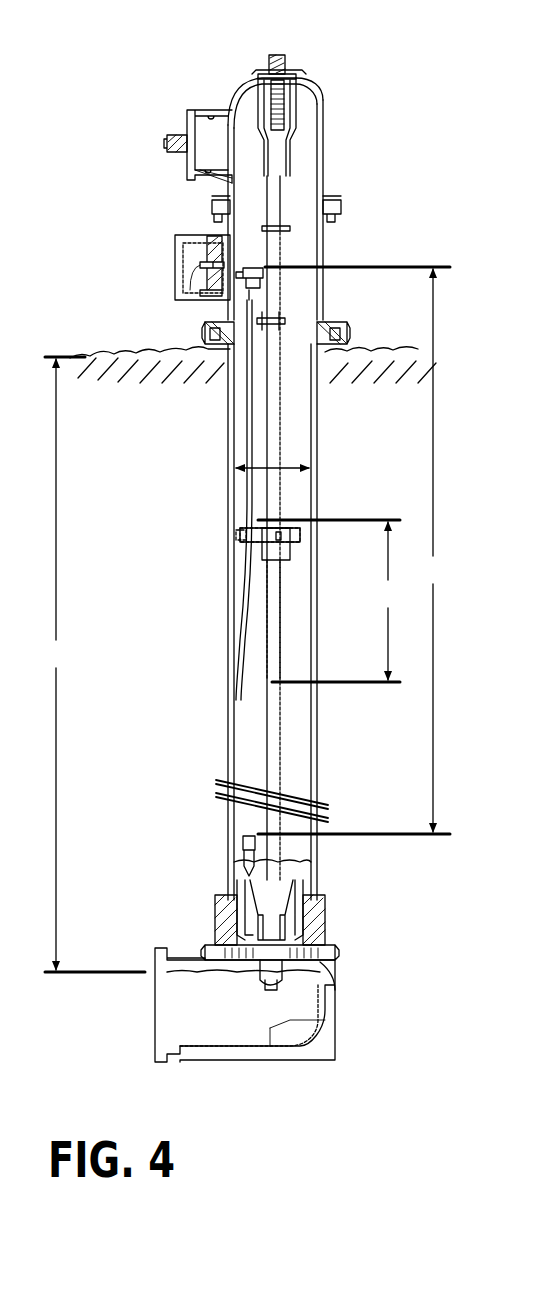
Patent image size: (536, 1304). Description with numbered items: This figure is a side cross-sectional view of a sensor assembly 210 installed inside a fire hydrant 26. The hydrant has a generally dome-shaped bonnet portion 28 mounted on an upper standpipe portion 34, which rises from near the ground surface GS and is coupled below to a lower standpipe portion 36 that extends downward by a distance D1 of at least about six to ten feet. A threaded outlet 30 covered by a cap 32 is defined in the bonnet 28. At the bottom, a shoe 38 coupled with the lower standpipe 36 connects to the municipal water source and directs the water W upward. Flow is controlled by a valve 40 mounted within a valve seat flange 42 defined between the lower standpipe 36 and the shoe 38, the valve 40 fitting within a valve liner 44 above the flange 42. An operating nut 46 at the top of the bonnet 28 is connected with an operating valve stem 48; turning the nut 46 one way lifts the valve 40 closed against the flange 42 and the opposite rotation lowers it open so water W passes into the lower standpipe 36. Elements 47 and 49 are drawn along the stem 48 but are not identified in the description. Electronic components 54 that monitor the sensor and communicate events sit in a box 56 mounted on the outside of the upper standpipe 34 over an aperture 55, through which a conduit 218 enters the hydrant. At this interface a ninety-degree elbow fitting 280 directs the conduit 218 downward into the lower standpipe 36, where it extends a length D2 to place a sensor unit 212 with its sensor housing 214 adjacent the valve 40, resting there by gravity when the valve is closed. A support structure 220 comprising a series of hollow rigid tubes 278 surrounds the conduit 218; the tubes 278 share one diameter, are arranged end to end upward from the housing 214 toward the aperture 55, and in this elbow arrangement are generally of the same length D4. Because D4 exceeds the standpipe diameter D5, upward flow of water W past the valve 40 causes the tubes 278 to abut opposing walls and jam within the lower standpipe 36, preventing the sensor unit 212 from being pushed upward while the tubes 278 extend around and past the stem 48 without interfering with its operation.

The fire hydrant 26 is at (354, 218).
The bonnet portion 28 is at (323, 100).
The threaded outlet 30 is at (210, 152).
The cap 32 is at (190, 138).
The upper standpipe portion 34 is at (322, 250).
The lower standpipe portion 36 is at (317, 442).
The shoe 38 is at (335, 1000).
The valve 40 is at (305, 925).
The valve seat flange 42 is at (330, 982).
The valve liner 44 is at (315, 933).
The operating nut 46 is at (277, 55).
The stem coupling 47 is at (247, 553).
The operating valve stem 48 is at (273, 603).
The coupling pin 49 is at (285, 553).
The electronic components 54 is at (195, 271).
The aperture 55 is at (262, 268).
The box 56 is at (175, 300).
The sensor assembly 210 is at (243, 303).
The sensor unit 212 is at (240, 848).
The sensor housing 214 is at (252, 868).
The conduit 218 is at (238, 532).
The support structure 220 is at (240, 507).
The rigid tubes 278 is at (250, 429).
The elbow fitting 280 is at (258, 283).
The ground surface GS is at (110, 357).
The distance D1 is at (92, 665).
The length D2 is at (355, 550).
The length D4 is at (332, 601).
The diameter D5 is at (285, 466).
The water W is at (221, 1024).